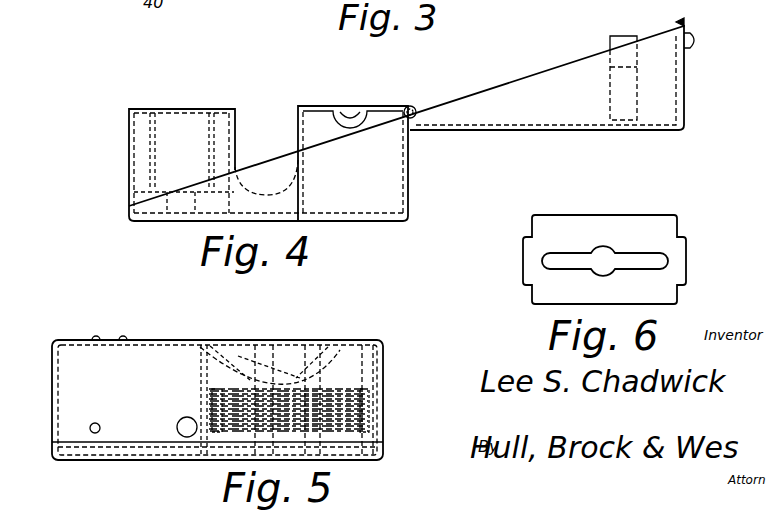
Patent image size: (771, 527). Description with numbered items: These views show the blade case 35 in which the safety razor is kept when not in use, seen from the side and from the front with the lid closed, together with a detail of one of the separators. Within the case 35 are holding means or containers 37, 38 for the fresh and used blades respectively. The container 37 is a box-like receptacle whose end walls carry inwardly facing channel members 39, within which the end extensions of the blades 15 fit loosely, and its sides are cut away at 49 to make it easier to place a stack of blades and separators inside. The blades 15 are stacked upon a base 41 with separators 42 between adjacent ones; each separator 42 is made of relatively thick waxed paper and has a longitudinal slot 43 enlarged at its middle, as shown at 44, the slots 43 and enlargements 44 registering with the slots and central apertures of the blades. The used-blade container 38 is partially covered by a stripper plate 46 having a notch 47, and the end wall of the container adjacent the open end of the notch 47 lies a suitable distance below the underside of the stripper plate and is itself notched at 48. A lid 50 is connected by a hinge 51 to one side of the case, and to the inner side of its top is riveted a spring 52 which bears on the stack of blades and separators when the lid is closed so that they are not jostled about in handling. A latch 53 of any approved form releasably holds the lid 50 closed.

In FIG. 5, the blade 15 is at (224, 382).
In FIG. 5, the case 35 is at (156, 447).
In FIG. 4, the holding means or container 37 is at (197, 118).
In FIG. 5, the holding means or container 37 is at (338, 345).
In FIG. 4, the holding means or container 38 is at (312, 131).
In FIG. 4, the channel members 39 is at (150, 128).
In FIG. 5, the channel members 39 is at (384, 348).
In FIG. 4, the base 41 is at (152, 219).
In FIG. 5, the base 41 is at (384, 430).
In FIG. 5, the separators 42 is at (208, 401).
In FIG. 6, the separators 42 is at (545, 222).
In FIG. 6, the longitudinal slot 43 is at (648, 250).
In FIG. 6, the enlargement 44 is at (604, 246).
In FIG. 4, the stripper plate 46 is at (384, 105).
In FIG. 4, the notch 47 is at (338, 108).
In FIG. 4, the notch 48 is at (344, 118).
In FIG. 5, the cut away 49 is at (268, 343).
In FIG. 4, the lid 50 is at (406, 112).
In FIG. 5, the lid 50 is at (143, 406).
In FIG. 4, the hinge 51 is at (412, 107).
In FIG. 4, the spring 52 is at (612, 40).
In FIG. 5, the spring 52 is at (316, 375).
In FIG. 4, the latch 53 is at (686, 25).